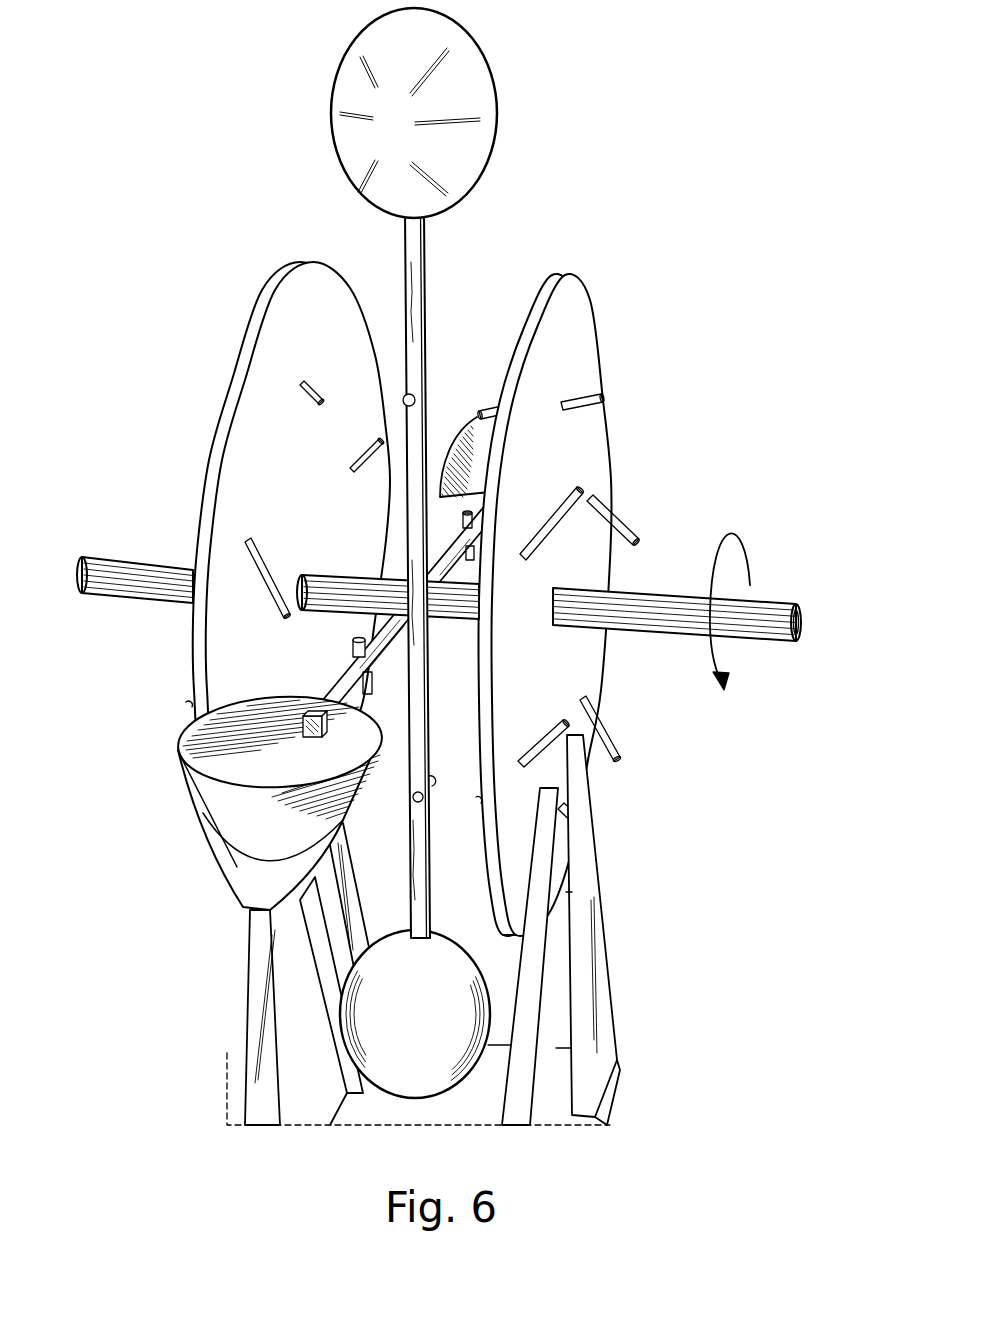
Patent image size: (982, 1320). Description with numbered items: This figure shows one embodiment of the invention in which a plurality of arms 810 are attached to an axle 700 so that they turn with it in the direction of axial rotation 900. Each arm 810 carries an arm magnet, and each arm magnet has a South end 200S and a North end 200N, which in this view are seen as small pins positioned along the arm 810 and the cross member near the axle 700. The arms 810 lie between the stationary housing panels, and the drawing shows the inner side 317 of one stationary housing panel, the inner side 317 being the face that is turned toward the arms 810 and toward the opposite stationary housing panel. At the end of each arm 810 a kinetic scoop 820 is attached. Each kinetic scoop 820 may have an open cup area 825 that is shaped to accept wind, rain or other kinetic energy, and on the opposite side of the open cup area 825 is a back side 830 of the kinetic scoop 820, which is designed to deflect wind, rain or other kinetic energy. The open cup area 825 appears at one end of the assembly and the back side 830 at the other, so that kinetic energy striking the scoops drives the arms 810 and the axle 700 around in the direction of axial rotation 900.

The back side of kinetic scoop 830 is at (425, 119).
The arm 810 is at (405, 272).
The South end of arm magnet 200S is at (415, 396).
The inner side of stationary housing panel 317 is at (300, 469).
The axle 700 is at (157, 562).
The direction of axial rotation 900 is at (731, 593).
The North end of arm magnet 200N is at (353, 652).
The kinetic scoop 820 is at (180, 760).
The open cup area of kinetic scoop 825 is at (437, 1029).